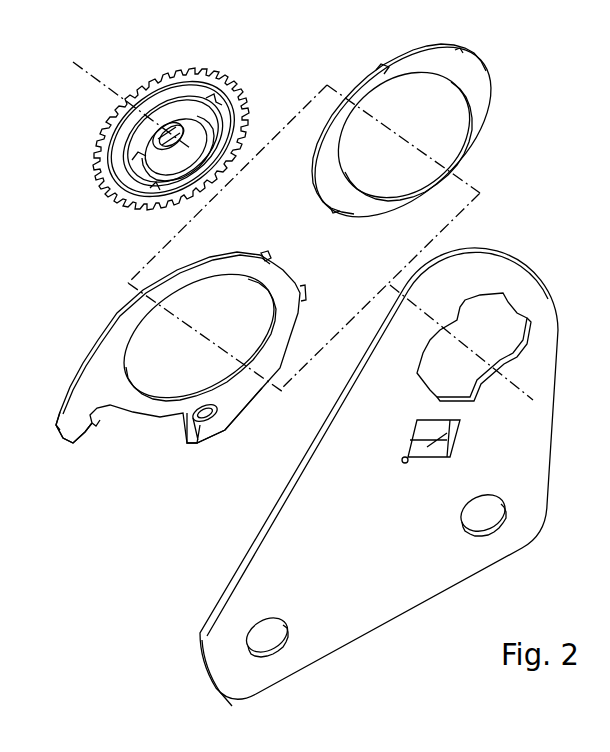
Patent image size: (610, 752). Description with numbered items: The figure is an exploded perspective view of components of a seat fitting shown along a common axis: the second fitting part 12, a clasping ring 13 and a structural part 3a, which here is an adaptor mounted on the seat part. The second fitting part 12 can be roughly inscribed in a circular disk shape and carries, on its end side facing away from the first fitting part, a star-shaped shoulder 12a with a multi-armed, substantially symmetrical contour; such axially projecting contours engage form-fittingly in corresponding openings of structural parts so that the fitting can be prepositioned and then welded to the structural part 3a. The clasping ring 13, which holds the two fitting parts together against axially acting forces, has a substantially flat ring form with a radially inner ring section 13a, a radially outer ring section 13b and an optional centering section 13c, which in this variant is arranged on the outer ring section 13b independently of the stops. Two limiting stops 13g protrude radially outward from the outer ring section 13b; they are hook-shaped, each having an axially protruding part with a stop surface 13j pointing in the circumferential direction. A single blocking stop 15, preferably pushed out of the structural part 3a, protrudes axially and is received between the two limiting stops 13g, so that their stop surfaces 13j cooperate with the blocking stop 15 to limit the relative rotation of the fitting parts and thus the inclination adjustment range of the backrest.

The second fitting part 12 is at (139, 163).
The star-shaped shoulder 12a is at (122, 172).
The clasping ring 13 is at (196, 353).
The inner ring section 13a is at (253, 280).
The outer ring section 13b is at (265, 258).
The centering section 13c is at (302, 290).
The limiting stops 13g is at (92, 398).
The stop surface 13j is at (190, 427).
The blocking stop 15 is at (436, 444).
The structural part 3a is at (379, 477).